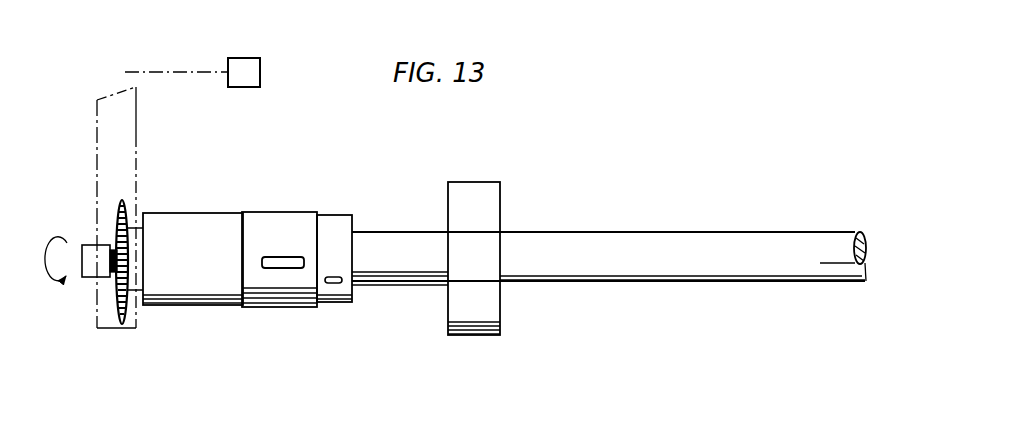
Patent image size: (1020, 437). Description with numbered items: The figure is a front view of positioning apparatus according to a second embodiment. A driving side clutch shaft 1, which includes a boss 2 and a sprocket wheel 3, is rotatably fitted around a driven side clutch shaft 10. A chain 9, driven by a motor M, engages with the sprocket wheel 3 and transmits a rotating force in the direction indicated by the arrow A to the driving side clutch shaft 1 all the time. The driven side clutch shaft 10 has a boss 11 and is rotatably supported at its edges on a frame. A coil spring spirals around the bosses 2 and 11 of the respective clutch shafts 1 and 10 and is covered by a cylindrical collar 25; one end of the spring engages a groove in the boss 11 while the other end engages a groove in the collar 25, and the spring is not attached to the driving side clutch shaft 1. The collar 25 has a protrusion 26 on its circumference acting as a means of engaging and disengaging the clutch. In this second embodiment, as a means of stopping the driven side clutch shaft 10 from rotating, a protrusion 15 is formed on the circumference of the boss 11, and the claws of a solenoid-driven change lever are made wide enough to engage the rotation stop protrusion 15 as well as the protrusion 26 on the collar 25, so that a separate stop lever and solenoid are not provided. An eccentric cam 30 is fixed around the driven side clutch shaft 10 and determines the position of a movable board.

The driving side clutch shaft 1 is at (203, 210).
The boss 2 is at (188, 307).
The sprocket wheel 3 is at (122, 330).
The chain 9 is at (136, 133).
The driven side clutch shaft 10 is at (403, 288).
The boss 11 is at (337, 215).
The protrusion 15 is at (336, 284).
The collar 25 is at (259, 290).
The protrusion 26 is at (282, 257).
The eccentric cam 30 is at (476, 328).
The motor M is at (250, 87).
The arrow A is at (56, 245).